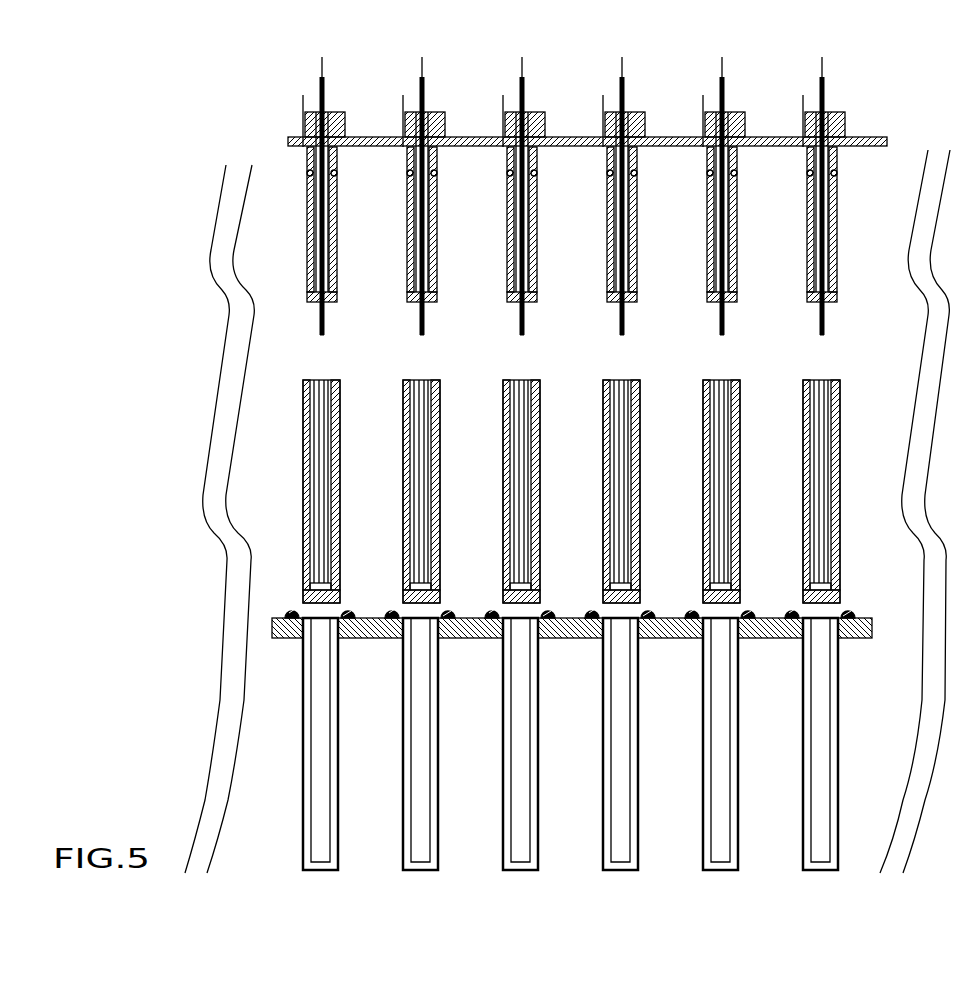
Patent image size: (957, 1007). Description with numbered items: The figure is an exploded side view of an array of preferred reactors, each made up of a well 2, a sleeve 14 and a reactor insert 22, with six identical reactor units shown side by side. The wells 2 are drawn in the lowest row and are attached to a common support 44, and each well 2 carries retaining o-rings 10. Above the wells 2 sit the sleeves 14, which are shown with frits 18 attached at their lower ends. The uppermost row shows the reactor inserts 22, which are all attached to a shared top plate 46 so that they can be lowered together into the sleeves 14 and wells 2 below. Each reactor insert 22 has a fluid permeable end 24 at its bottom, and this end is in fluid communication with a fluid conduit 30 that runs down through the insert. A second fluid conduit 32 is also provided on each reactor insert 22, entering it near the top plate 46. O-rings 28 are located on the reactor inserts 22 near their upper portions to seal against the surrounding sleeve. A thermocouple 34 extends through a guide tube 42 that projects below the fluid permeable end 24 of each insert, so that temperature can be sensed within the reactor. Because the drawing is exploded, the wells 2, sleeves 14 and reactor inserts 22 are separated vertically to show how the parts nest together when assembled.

The well 2 is at (590, 744).
The retaining o-ring 10 is at (589, 593).
The sleeve 14 is at (594, 491).
The frit 18 is at (591, 557).
The reactor insert 22 is at (598, 202).
The fluid permeable end 24 is at (597, 300).
The o-ring 28 is at (596, 173).
The fluid conduit 30 is at (589, 172).
The fluid conduit 32 is at (303, 95).
The thermocouple 34 is at (596, 352).
The guide tube 42 is at (598, 322).
The support 44 is at (578, 654).
The top plate 46 is at (587, 117).